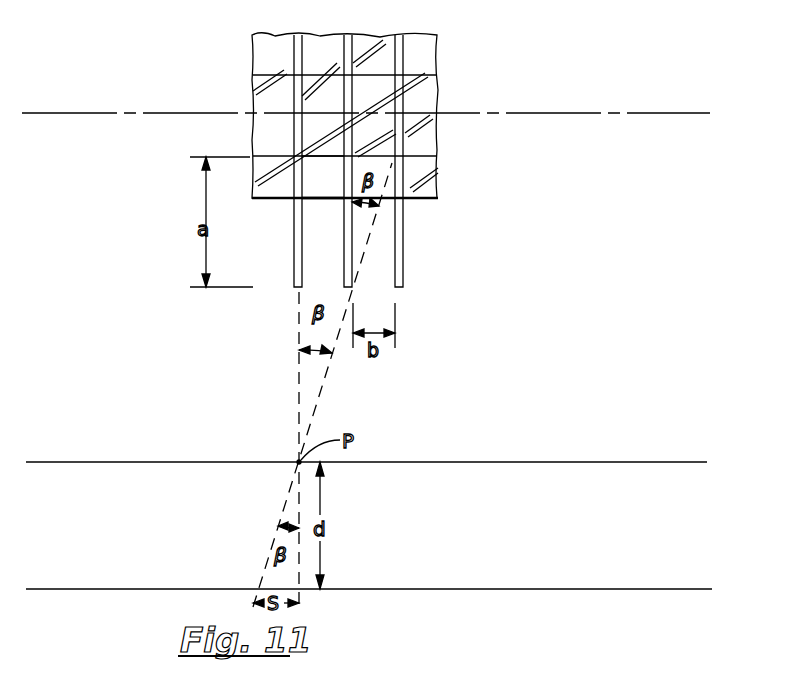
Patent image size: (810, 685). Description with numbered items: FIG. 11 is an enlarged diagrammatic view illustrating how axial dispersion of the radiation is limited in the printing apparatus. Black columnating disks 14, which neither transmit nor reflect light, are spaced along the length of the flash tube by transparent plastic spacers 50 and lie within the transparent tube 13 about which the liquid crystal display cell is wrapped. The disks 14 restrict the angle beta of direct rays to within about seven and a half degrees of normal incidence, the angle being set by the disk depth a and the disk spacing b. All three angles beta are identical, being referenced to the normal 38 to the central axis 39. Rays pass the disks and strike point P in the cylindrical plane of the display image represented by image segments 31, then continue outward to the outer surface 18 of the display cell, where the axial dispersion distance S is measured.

The tube 13 is at (415, 137).
The columnating disks 14 is at (294, 236).
The outer surface of liquid crystal display cell 18 is at (487, 589).
The image segments 31 is at (478, 462).
The normal 38 is at (299, 388).
The central axis 39 is at (507, 113).
The transparent plastic spacers 50 is at (314, 180).